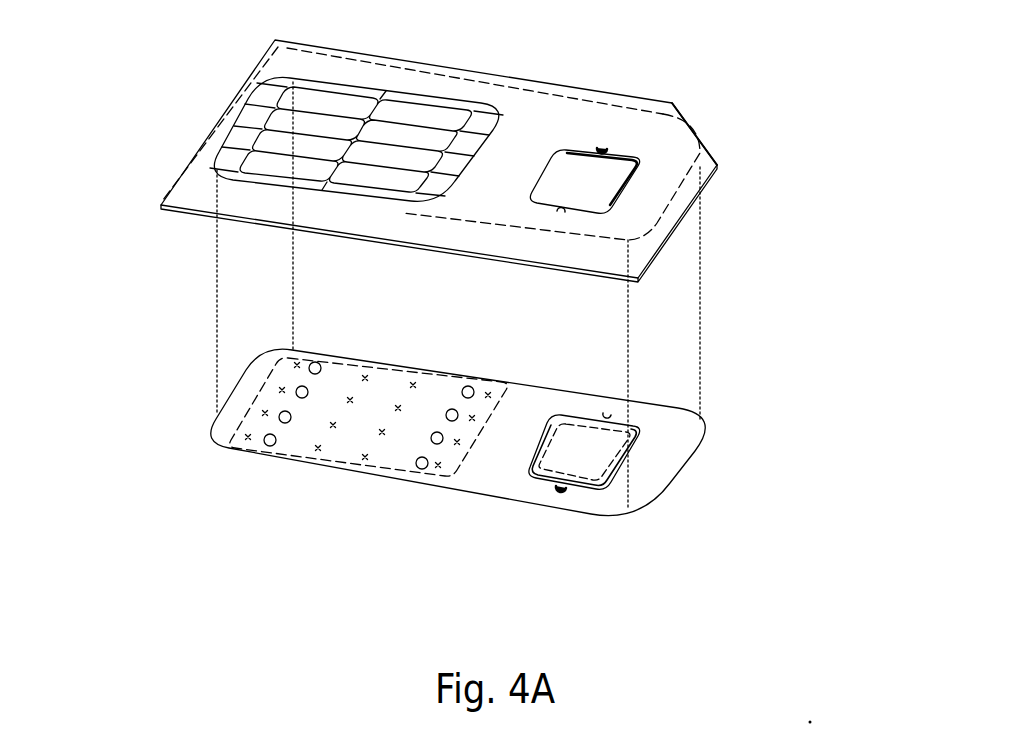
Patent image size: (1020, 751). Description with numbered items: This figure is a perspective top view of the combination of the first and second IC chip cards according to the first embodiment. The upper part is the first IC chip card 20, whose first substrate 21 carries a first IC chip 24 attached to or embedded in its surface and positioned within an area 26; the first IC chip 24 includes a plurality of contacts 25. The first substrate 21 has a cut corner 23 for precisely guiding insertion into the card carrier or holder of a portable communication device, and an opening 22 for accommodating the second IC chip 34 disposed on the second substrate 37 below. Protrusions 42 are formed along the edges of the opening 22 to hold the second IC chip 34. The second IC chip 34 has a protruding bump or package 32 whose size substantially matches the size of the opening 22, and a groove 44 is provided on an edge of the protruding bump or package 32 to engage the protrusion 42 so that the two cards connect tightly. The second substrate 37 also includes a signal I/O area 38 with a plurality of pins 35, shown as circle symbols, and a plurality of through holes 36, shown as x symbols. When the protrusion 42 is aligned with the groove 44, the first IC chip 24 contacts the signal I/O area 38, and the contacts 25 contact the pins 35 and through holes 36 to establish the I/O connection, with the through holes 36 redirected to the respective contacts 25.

The first IC chip card 20 is at (640, 283).
The first substrate 21 is at (655, 236).
The opening 22 is at (612, 186).
The cut corner 23 is at (697, 135).
The first IC chip 24 is at (232, 105).
The contacts 25 is at (355, 141).
The area 26 is at (525, 112).
The protruding bump or package 32 is at (643, 440).
The second IC chip 34 is at (543, 460).
The pins 35 is at (465, 388).
The through holes 36 is at (295, 365).
The second substrate 37 is at (333, 470).
The signal I/O area 38 is at (262, 390).
The protrusions 42 is at (602, 147).
The groove 44 is at (560, 488).